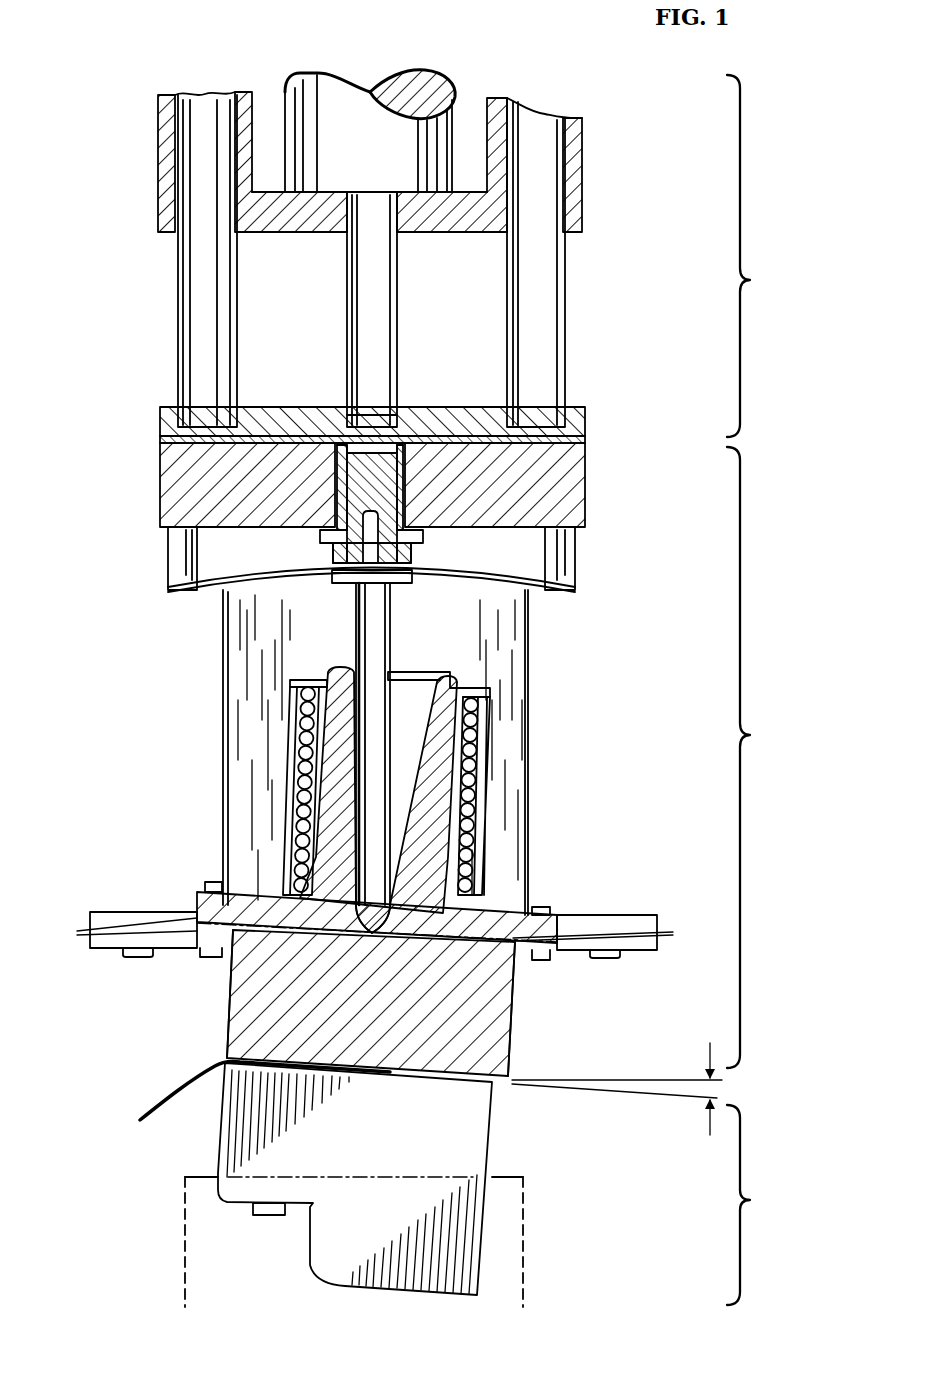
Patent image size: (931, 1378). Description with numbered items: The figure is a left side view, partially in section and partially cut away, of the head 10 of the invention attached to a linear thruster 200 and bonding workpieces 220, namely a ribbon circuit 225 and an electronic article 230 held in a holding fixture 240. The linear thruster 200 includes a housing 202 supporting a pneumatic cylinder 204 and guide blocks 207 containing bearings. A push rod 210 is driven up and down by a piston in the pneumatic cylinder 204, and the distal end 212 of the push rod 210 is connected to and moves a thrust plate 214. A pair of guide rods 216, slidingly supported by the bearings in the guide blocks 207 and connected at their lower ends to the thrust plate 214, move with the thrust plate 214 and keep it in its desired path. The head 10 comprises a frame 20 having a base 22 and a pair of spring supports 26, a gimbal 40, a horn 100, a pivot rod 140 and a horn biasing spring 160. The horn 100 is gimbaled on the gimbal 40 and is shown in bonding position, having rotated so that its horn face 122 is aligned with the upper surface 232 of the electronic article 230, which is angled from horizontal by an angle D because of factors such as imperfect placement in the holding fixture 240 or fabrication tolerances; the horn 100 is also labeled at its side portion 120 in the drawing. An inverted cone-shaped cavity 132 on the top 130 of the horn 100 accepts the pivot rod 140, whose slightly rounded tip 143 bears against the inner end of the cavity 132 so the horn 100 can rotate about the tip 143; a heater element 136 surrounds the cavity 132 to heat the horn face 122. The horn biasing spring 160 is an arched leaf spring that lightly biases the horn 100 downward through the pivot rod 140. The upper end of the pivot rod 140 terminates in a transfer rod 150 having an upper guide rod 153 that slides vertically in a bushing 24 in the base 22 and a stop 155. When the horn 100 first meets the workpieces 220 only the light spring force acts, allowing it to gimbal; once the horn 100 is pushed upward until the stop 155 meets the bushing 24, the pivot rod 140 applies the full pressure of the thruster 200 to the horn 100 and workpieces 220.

The head 10 is at (759, 757).
The frame 20 is at (140, 495).
The base 22 is at (163, 468).
The bushing 24 is at (425, 535).
The spring supports 26 is at (173, 563).
The gimbal 40 is at (232, 958).
The horn 100 is at (512, 998).
The die side face 120 is at (232, 1030).
The horn face 122 is at (497, 1065).
The top 130 is at (537, 767).
The cavity 132 is at (417, 698).
The heater element 136 is at (470, 808).
The pivot rod 140 is at (378, 636).
The tip 143 is at (455, 922).
The transfer rod 150 is at (405, 555).
The upper guide rod 153 is at (340, 540).
The stop 155 is at (332, 575).
The horn biasing spring 160 is at (233, 602).
The linear thruster 200 is at (765, 256).
The housing 202 is at (446, 228).
The pneumatic cylinder 204 is at (440, 72).
The guide blocks 207 is at (158, 155).
The push rod 210 is at (373, 310).
The distal end 212 is at (373, 415).
The thrust plate 214 is at (160, 410).
The guide rods 216 is at (225, 325).
The workpieces 220 is at (768, 1205).
The ribbon circuit 225 is at (177, 1097).
The electronic article 230 is at (460, 1127).
The upper surface 232 is at (492, 1090).
The holding fixture 240 is at (185, 1192).